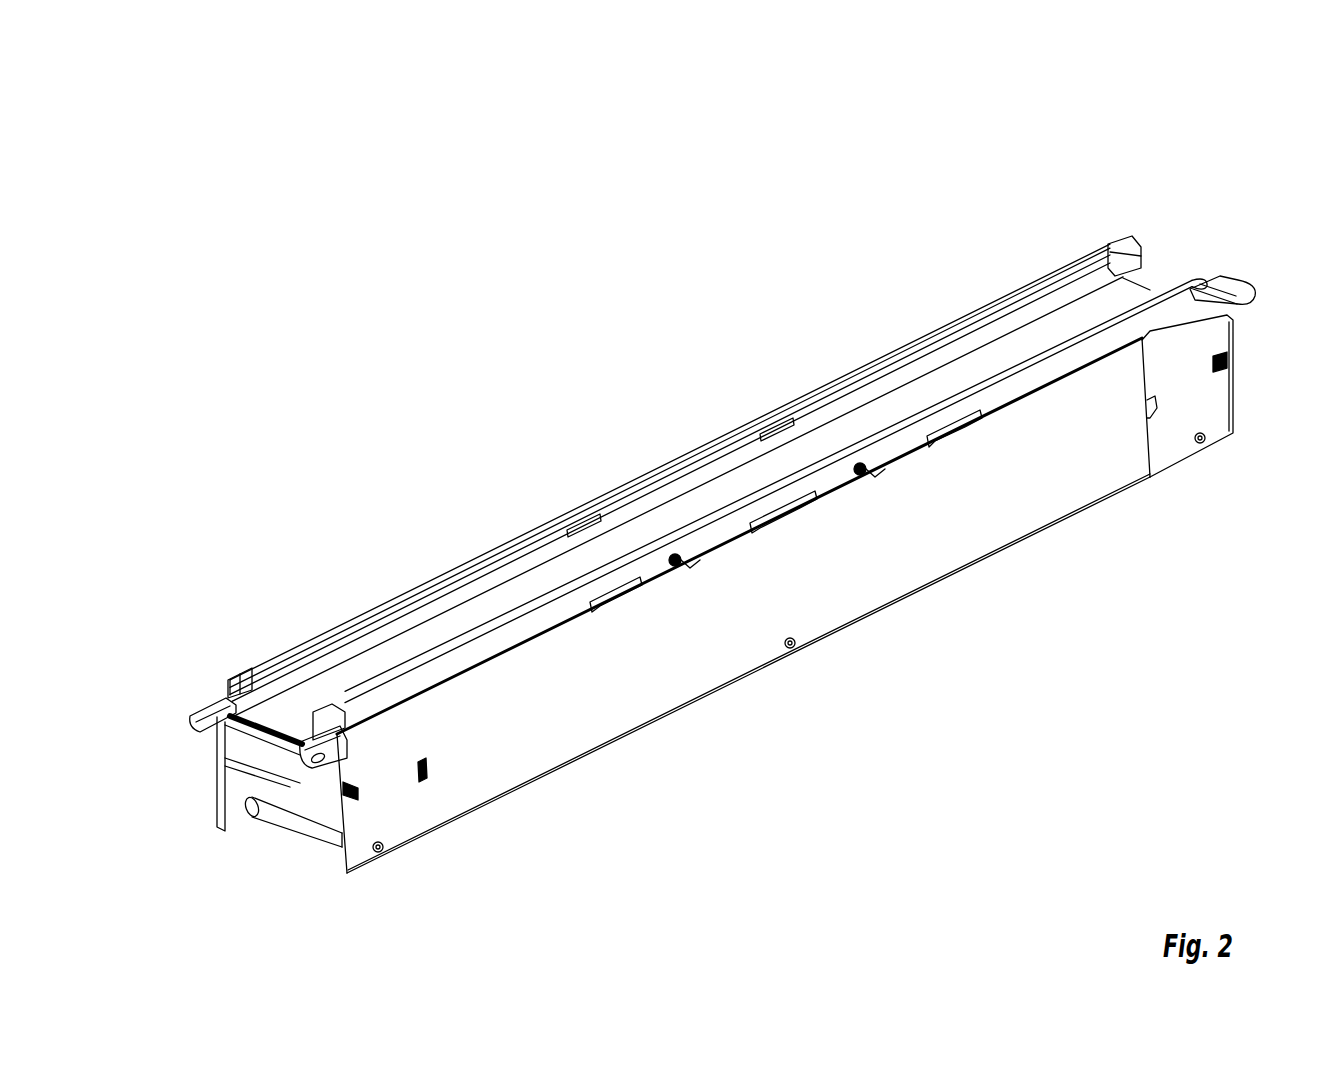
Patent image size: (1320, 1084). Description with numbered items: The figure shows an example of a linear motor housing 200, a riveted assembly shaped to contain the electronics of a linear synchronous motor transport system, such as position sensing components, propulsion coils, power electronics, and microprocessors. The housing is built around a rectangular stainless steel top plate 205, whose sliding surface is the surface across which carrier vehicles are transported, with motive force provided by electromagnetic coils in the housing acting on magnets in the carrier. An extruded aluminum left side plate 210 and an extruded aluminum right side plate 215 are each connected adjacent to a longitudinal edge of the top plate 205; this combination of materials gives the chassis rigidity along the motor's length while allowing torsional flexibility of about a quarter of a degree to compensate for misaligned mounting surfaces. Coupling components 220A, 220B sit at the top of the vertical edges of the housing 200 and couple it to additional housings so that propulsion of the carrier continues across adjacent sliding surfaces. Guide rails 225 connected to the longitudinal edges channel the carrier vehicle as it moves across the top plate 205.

The linear motor housing 200 is at (272, 229).
The rectangular stainless steel top plate 205 is at (733, 437).
The extruded aluminum left side plate 210 is at (508, 727).
The extruded aluminum right side plate 215 is at (218, 805).
The coupling component 220A is at (208, 697).
The coupling component 220B is at (1237, 290).
The guide rails 225 is at (927, 413).